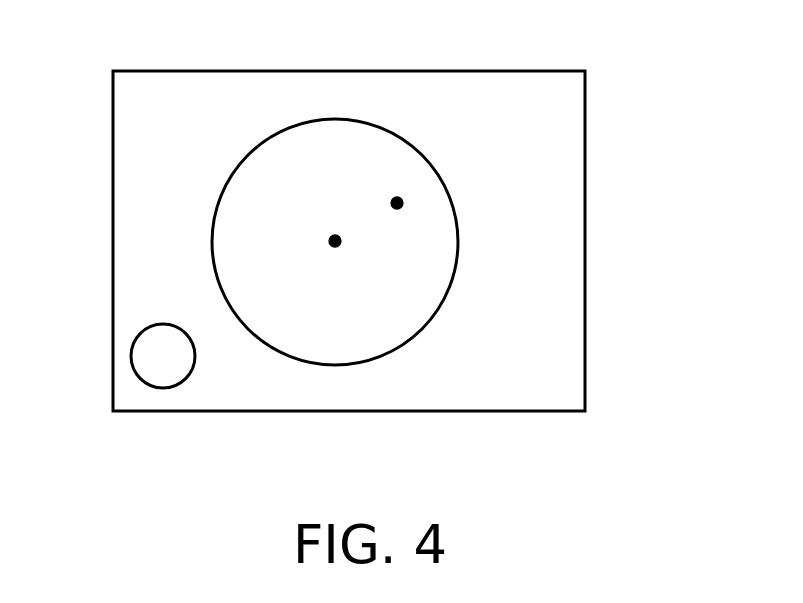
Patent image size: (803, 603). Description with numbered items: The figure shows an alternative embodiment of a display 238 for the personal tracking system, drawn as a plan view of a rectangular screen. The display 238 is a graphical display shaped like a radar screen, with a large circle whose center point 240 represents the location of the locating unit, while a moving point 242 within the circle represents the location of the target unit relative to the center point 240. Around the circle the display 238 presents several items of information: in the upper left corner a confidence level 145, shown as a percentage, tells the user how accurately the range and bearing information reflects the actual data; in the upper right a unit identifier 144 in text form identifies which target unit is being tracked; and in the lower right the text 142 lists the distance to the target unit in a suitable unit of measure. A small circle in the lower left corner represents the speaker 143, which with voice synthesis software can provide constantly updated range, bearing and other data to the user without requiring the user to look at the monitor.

The display 238 is at (585, 246).
The center point 240 is at (335, 248).
The moving point 242 is at (397, 209).
The speaker 143 is at (131, 356).
The confidence level 145 is at (133, 103).
The unit identifier 144 is at (493, 91).
The text 142 is at (473, 383).